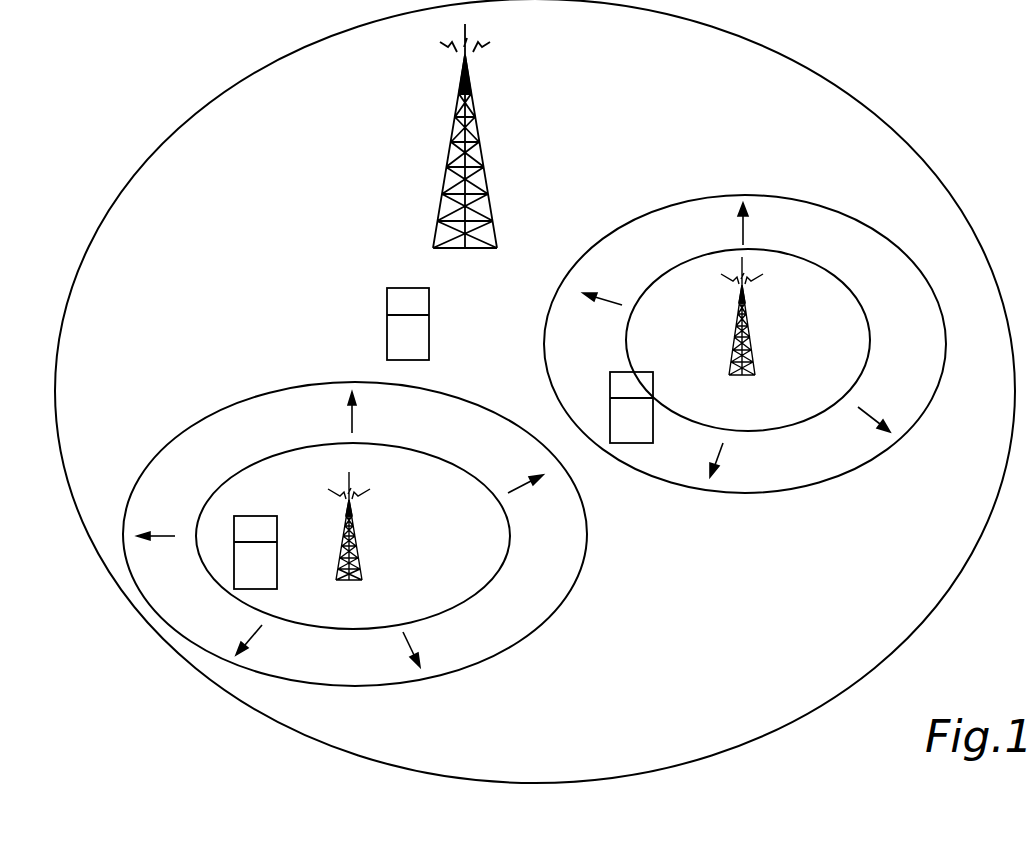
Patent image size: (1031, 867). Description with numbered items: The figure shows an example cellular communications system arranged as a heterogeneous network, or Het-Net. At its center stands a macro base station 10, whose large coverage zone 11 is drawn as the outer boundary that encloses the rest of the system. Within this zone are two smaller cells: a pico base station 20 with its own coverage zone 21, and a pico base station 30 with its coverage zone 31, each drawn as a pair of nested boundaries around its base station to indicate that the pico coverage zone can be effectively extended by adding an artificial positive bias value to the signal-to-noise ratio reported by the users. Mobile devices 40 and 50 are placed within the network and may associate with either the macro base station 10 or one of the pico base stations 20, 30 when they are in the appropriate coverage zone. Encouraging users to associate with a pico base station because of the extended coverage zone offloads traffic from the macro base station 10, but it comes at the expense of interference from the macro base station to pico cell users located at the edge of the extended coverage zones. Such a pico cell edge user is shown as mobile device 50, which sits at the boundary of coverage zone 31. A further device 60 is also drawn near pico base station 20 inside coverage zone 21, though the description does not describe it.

The macro base station 10 is at (486, 170).
The coverage zone 11 is at (704, 632).
The pico base station 20 is at (360, 538).
The coverage zone 21 is at (407, 597).
The pico base station 30 is at (752, 327).
The coverage zone 31 is at (804, 385).
The mobile device 40 is at (385, 297).
The mobile device 50 is at (654, 380).
The user equipment 60 is at (278, 525).